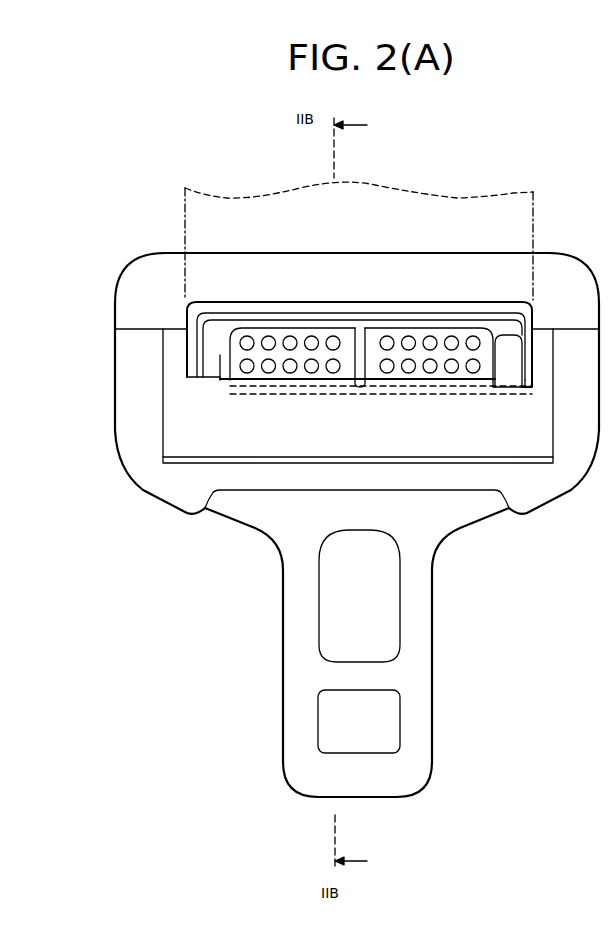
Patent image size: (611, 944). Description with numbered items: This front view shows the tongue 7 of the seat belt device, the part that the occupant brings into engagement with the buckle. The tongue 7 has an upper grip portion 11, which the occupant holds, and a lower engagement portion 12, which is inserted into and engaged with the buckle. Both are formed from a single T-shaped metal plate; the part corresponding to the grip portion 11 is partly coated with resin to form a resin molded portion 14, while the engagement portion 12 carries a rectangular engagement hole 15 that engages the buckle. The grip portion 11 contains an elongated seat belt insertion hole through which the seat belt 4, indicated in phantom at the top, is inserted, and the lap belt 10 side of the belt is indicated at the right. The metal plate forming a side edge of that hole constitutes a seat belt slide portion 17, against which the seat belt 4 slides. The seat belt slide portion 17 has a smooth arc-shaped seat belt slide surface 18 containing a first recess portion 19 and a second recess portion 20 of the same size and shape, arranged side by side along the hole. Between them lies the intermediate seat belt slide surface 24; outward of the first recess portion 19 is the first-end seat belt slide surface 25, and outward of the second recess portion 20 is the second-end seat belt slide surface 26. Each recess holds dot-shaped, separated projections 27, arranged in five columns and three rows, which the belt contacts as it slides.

The seat belt 4 is at (465, 197).
The tongue 7 is at (357, 613).
The lap belt 10 is at (533, 216).
The grip portion 11 is at (571, 468).
The engagement portion 12 is at (425, 641).
The resin molded portion 14 is at (143, 277).
The engagement hole 15 is at (375, 752).
The seat belt slide portion 17 is at (214, 360).
The seat belt slide surface 18 is at (512, 368).
The first recess portion 19 is at (486, 388).
The second recess portion 20 is at (348, 378).
The intermediate seat belt slide surface 24 is at (361, 390).
The first-end seat belt slide surface 25 is at (513, 388).
The second-end seat belt slide surface 26 is at (219, 382).
The projections 27 is at (293, 377).